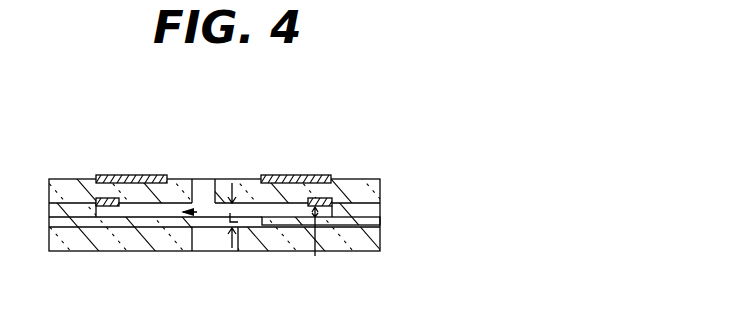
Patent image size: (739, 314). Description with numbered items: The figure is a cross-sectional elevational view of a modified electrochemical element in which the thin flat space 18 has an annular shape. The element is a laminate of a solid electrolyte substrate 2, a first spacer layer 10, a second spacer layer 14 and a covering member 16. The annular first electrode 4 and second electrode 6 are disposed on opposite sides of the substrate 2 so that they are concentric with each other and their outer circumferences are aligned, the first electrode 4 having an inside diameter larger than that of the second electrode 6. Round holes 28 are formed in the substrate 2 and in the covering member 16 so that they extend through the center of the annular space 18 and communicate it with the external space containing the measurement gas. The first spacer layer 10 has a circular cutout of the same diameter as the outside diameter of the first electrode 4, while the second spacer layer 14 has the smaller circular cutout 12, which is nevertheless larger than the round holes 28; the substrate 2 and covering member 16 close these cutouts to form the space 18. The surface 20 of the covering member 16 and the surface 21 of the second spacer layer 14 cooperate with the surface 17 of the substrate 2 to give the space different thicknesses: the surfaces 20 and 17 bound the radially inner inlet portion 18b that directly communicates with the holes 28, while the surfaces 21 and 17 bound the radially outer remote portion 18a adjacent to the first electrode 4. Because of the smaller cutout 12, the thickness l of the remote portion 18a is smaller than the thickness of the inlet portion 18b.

The solid electrolyte substrate 2 is at (372, 187).
The first electrode 4 is at (332, 197).
The second electrode 6 is at (287, 175).
The first spacer layer 10 is at (376, 209).
The circular cutout 12 is at (175, 252).
The second spacer layer 14 is at (372, 222).
The covering member 16 is at (374, 248).
The surface of the substrate 17 is at (131, 194).
The thin flat space 18 is at (196, 212).
The remote portion 18a is at (110, 212).
The inlet portion 18b is at (251, 178).
The surface of the covering member 20 is at (258, 228).
The surface of the second spacer layer 21 is at (294, 226).
The round holes 28 is at (197, 180).
The thickness of the remote portion l is at (273, 229).